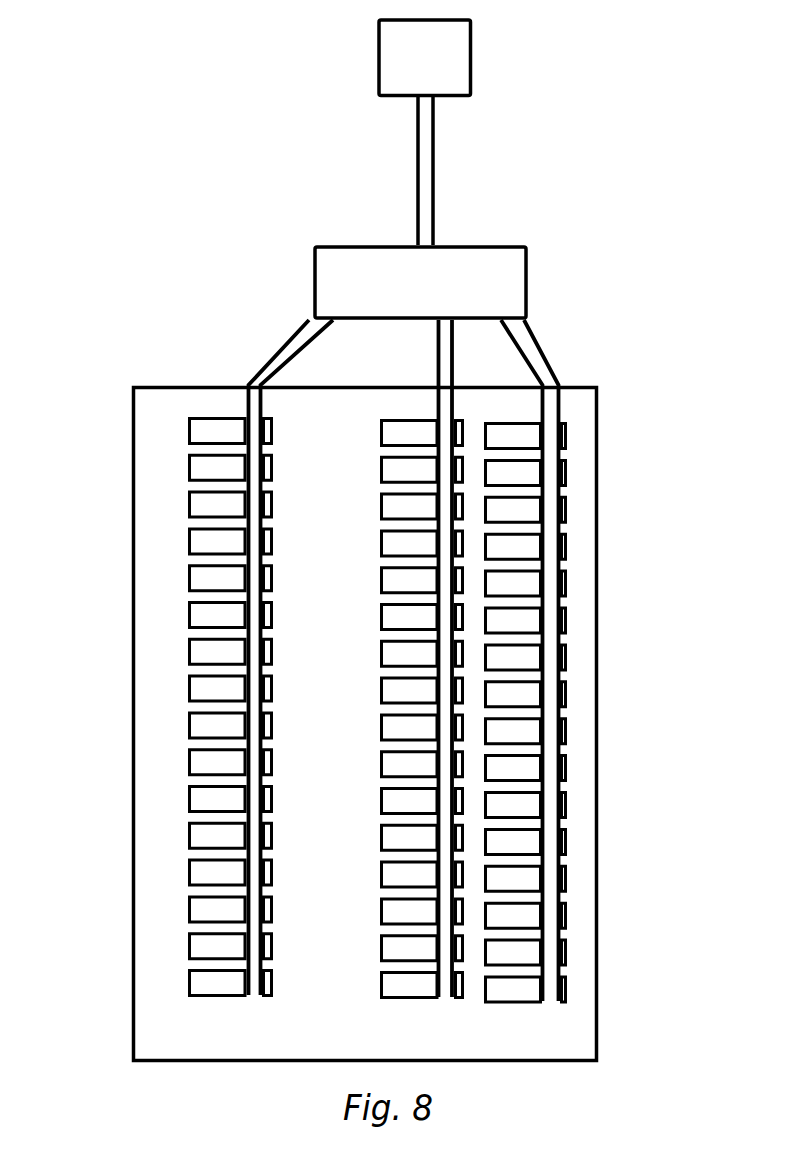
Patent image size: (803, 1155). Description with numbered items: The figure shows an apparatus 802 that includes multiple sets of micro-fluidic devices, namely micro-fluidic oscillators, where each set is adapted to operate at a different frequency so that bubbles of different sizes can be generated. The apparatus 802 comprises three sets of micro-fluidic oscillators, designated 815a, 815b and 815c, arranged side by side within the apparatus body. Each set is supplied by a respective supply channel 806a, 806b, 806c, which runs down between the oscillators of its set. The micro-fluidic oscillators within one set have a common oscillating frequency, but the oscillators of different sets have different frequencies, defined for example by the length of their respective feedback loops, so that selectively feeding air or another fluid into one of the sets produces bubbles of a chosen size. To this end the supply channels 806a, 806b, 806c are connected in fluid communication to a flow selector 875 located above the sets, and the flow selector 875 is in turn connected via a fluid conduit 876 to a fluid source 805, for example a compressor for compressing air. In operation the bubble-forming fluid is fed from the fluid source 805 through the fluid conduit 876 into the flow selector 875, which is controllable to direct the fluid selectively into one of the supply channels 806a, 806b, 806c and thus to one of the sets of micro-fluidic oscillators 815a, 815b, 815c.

The apparatus 802 is at (312, 1010).
The fluid source 805 is at (377, 64).
The fluid conduit 876 is at (415, 168).
The flow selector 875 is at (313, 265).
The supply channel 806a is at (265, 367).
The supply channel 806b is at (432, 368).
The supply channel 806c is at (535, 345).
The set of micro-fluidic oscillators 815a is at (188, 997).
The set of micro-fluidic oscillators 815b is at (380, 997).
The set of micro-fluidic oscillators 815c is at (567, 1004).